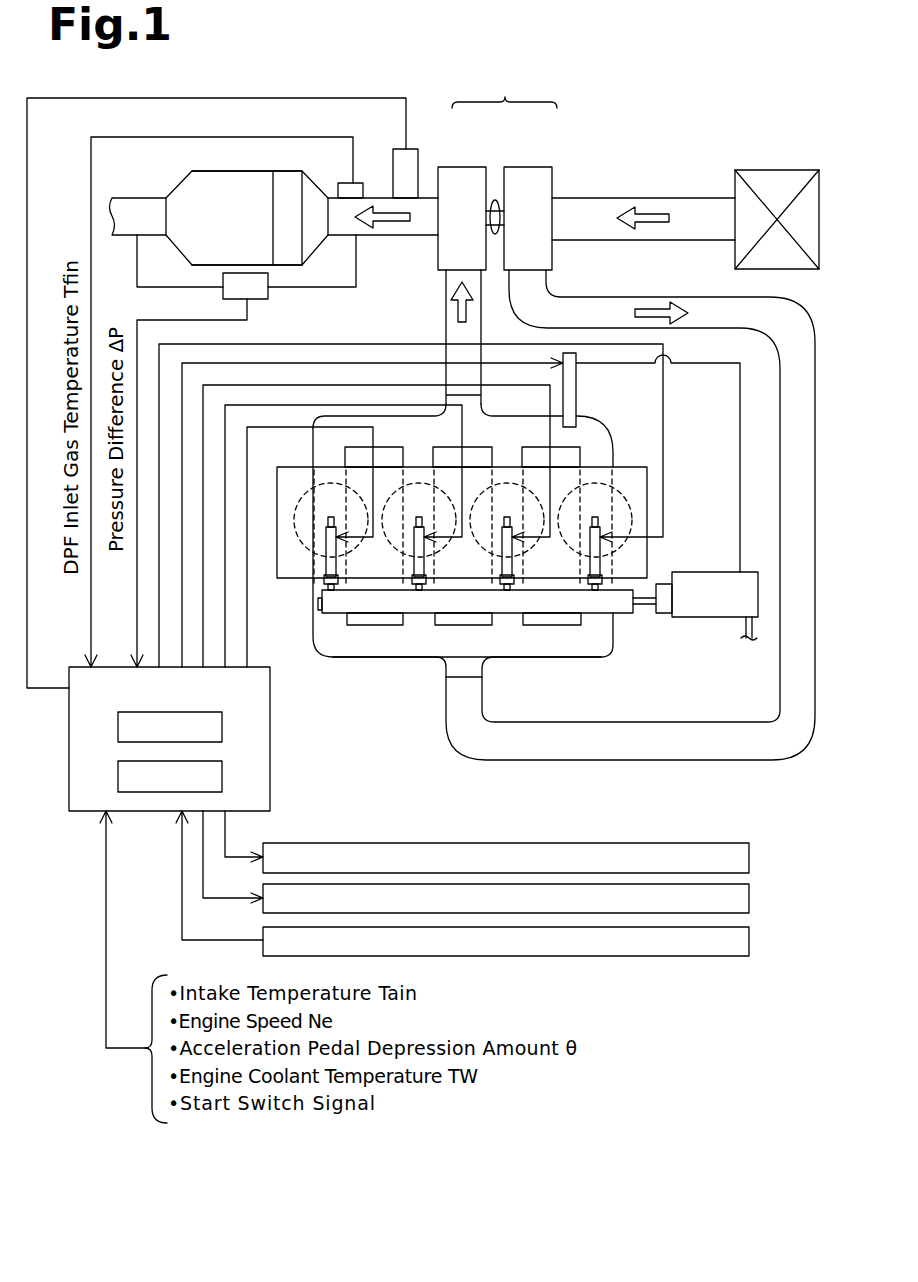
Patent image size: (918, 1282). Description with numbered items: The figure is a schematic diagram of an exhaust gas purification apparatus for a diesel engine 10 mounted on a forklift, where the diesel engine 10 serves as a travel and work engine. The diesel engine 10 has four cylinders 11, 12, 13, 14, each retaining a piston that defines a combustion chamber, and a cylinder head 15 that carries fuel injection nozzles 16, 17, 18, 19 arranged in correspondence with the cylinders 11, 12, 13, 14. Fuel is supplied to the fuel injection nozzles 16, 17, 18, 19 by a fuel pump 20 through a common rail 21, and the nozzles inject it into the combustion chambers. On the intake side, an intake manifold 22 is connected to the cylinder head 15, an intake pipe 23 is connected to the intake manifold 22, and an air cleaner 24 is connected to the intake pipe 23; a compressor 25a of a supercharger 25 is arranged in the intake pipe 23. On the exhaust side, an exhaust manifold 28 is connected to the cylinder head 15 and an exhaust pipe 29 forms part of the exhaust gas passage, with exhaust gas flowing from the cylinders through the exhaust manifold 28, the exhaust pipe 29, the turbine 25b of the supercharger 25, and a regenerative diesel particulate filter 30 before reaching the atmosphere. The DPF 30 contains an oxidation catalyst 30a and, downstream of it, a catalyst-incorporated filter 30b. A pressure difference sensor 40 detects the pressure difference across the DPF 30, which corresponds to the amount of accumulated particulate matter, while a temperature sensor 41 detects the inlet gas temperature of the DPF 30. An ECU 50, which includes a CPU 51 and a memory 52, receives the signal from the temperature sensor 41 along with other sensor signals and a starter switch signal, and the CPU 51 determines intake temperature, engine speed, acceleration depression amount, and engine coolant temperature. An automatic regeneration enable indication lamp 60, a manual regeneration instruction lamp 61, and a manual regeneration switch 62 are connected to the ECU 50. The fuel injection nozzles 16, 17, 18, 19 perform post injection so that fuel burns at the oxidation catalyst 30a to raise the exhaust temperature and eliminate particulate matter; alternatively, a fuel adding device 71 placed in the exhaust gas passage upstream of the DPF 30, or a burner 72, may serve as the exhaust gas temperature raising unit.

The diesel engine 10 is at (694, 431).
The cylinder 11 is at (308, 492).
The cylinder 12 is at (390, 485).
The cylinder 13 is at (540, 485).
The cylinder 14 is at (625, 490).
The cylinder head 15 is at (648, 552).
The fuel injection nozzle 16 is at (324, 546).
The fuel injection nozzle 17 is at (412, 546).
The fuel injection nozzle 18 is at (500, 546).
The fuel injection nozzle 19 is at (588, 546).
The fuel pump 20 is at (748, 572).
The common rail 21 is at (617, 615).
The intake manifold 22 is at (551, 647).
The intake pipe 23 is at (443, 696).
The air cleaner 24 is at (773, 175).
The supercharger 25 is at (498, 166).
The compressor 25a is at (536, 175).
The turbine 25b is at (475, 175).
The exhaust manifold 28 is at (604, 418).
The exhaust pipe 29 is at (446, 316).
The regenerative diesel particulate filter (DPF) 30 is at (258, 215).
The oxidation catalyst 30a is at (290, 170).
The catalyst-incorporated filter 30b is at (228, 170).
The pressure difference sensor 40 is at (258, 300).
The temperature sensor 41 is at (363, 191).
The engine control unit (ECU) 50 is at (199, 739).
The central processing unit (CPU) 51 is at (218, 712).
The memory 52 is at (218, 761).
The automatic regeneration enable indication lamp 60 is at (751, 858).
The manual regeneration instruction lamp 61 is at (751, 899).
The manual regeneration switch 62 is at (751, 941).
The fuel adding device 71 is at (578, 380).
The burner 72 is at (418, 150).